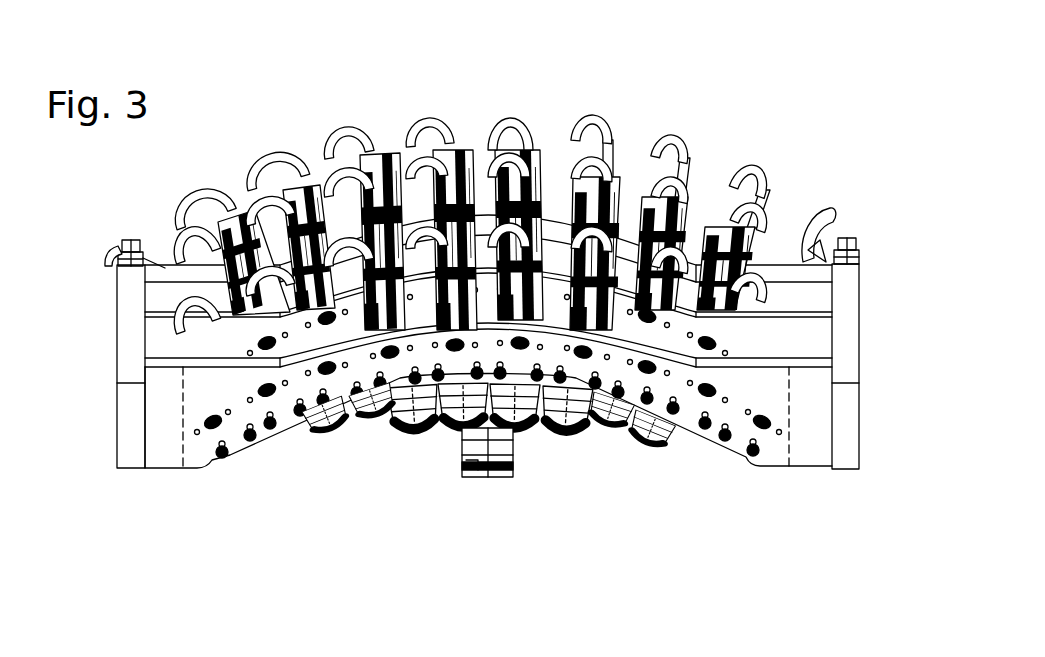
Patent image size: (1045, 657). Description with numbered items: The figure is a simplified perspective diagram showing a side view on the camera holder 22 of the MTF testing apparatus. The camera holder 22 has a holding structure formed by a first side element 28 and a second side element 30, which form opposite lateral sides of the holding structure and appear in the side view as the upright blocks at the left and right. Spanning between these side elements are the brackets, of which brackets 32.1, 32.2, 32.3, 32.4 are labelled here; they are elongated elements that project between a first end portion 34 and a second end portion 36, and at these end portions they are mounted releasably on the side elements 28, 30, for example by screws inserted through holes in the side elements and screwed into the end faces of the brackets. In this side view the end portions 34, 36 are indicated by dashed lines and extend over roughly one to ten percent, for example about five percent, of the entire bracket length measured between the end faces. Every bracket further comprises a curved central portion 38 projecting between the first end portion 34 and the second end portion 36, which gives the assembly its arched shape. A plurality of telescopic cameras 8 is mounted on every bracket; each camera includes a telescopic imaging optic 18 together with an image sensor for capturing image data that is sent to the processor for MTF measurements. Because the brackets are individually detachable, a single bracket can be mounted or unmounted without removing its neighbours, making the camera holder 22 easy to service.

The telescopic cameras 8 is at (547, 178).
The telescopic imaging optic 18 is at (570, 420).
The camera holder 22 is at (768, 104).
The first side element 28 is at (132, 455).
The second side element 30 is at (843, 428).
The bracket 32.1 is at (809, 455).
The bracket 32.2 is at (815, 333).
The bracket 32.3 is at (815, 297).
The bracket 32.4 is at (775, 272).
The first end portion 34 is at (160, 483).
The second end portion 36 is at (822, 476).
The curved central portion 38 is at (463, 363).